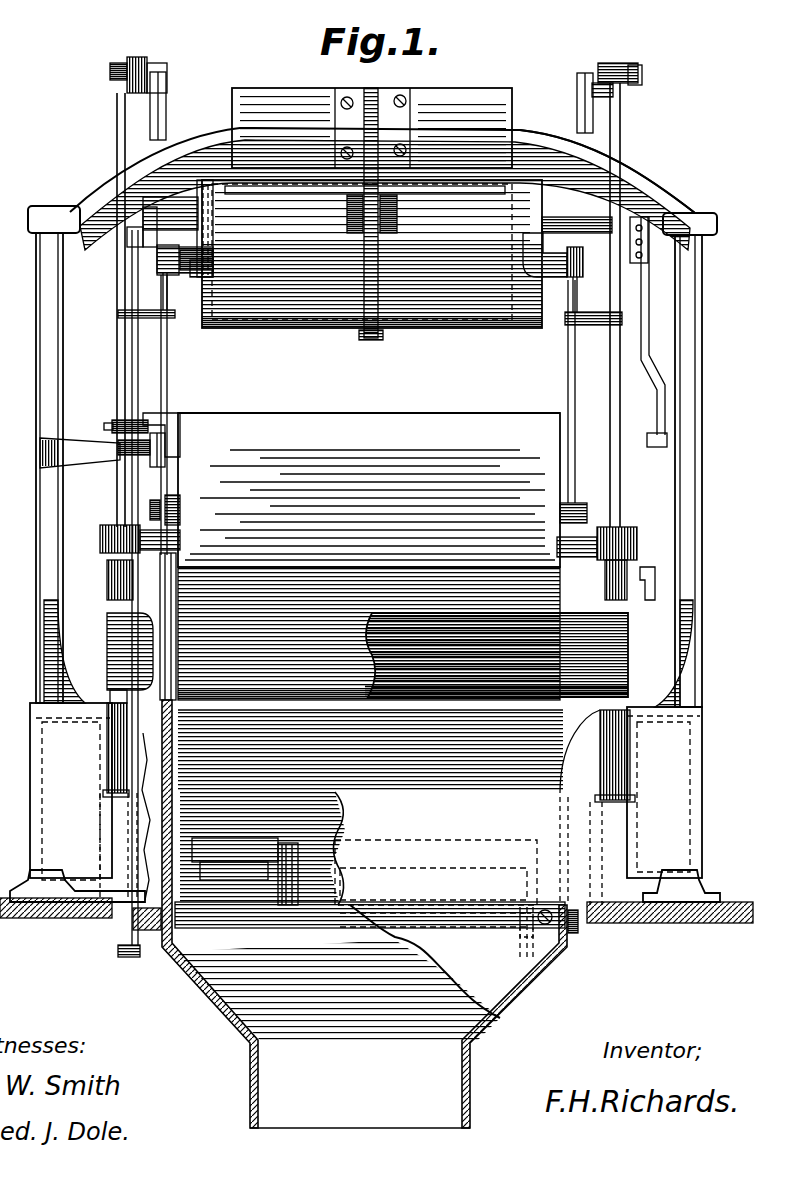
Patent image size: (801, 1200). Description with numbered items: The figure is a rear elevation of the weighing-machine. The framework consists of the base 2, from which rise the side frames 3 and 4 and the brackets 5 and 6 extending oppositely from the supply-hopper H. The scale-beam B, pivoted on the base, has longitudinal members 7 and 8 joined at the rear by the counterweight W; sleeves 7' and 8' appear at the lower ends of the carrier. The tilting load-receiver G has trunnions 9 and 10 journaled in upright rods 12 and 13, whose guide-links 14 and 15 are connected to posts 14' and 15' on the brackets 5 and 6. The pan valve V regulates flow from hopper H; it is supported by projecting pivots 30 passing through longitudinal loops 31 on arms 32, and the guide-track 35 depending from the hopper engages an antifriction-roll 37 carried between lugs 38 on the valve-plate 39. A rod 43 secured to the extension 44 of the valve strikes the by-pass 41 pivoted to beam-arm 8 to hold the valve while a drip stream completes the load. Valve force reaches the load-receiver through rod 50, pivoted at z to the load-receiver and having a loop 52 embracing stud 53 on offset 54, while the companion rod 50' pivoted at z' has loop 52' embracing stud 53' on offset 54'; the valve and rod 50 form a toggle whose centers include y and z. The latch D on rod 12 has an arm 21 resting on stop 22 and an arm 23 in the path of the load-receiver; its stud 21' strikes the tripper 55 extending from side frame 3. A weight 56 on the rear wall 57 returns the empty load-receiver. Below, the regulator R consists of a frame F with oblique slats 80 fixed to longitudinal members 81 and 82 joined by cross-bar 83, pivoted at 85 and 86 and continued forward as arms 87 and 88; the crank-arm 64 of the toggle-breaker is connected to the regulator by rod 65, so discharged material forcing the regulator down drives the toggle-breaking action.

The guide-link 14 is at (136, 63).
The post 14' is at (175, 101).
The bracket 5 is at (180, 140).
The guide-link 15 is at (620, 60).
The post 15' is at (579, 103).
The bracket 6 is at (637, 170).
The extension 44 is at (642, 218).
The valve-plate 39 is at (283, 192).
The longitudinal loop 31 is at (196, 197).
The crank-arm 64 is at (143, 218).
The projecting pivot 30 is at (192, 222).
The arm 32 is at (200, 258).
The stud 53 is at (135, 263).
The longitudinal loop 52 is at (129, 291).
The offset 54 is at (185, 274).
The antifriction-roll 37 is at (392, 200).
The lugs 38 is at (397, 210).
The guide-track 35 is at (380, 268).
The offset 54' is at (523, 261).
The loop 52' is at (590, 256).
The stud 53' is at (592, 292).
The rod 43 is at (660, 320).
The side frame 3 is at (36, 382).
The upright rod 12 is at (117, 360).
The rod 50 is at (183, 487).
The rod 65 is at (140, 380).
The companion rod 50' is at (555, 391).
The upright rod 13 is at (612, 360).
The side frame 4 is at (695, 400).
The arm 21 is at (116, 414).
The stud 21' is at (91, 427).
The detent or latch D is at (161, 424).
The tripper 55 is at (92, 450).
The stop 22 is at (125, 455).
The arm 23 is at (165, 450).
The rear wall 57 is at (423, 435).
The pivot z is at (172, 505).
The pivot z' is at (577, 496).
The toggle center y is at (180, 540).
The weight 56 is at (277, 580).
The beam-arm 7 is at (108, 580).
The trunnion 9 is at (158, 553).
The trunnion 10 is at (588, 560).
The beam-arm 8 is at (607, 564).
The by-pass 41 is at (657, 583).
The counterweight W is at (496, 642).
The scale-beam B is at (116, 658).
The sleeve 7' is at (99, 750).
The sleeve 8' is at (604, 807).
The base 2 is at (376, 813).
The cross-bar 83 is at (228, 838).
The regulator R is at (262, 848).
The frame F is at (235, 849).
The bars or slats 80 is at (286, 860).
The longitudinal member 82 is at (535, 880).
The pivot 85 is at (118, 945).
The arm 87 is at (200, 940).
The longitudinal member 81 is at (165, 955).
The arm 88 is at (530, 935).
The pivot 86 is at (578, 930).
The valve V is at (372, 254).
The load-receiver G is at (369, 490).
The supply-hopper H is at (372, 128).